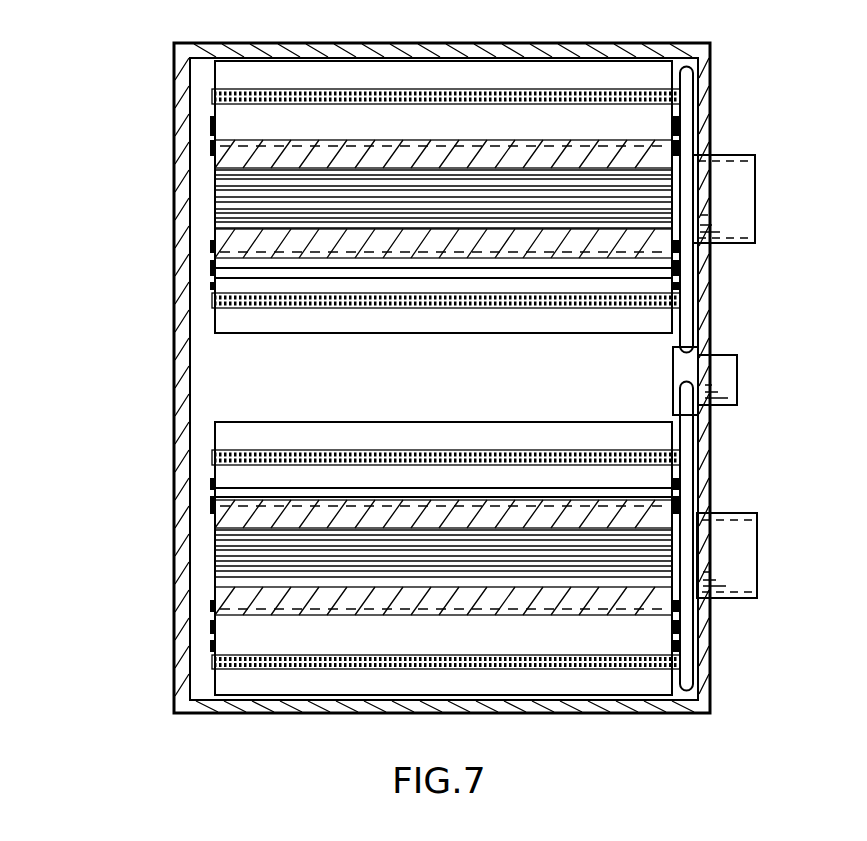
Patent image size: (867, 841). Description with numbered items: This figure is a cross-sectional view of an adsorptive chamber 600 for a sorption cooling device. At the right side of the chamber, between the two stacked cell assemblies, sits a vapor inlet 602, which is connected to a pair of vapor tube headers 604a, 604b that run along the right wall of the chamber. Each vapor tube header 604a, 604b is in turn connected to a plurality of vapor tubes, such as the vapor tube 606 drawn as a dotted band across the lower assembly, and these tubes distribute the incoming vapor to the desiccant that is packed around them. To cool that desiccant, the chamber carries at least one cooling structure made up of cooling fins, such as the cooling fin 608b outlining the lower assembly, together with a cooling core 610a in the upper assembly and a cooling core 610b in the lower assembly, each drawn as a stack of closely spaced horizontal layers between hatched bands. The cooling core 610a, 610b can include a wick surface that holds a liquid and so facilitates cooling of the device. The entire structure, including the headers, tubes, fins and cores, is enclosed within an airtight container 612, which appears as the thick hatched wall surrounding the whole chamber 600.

The adsorptive chamber 600 is at (160, 372).
The vapor inlet 602 is at (738, 380).
The vapor tube header 604a is at (685, 647).
The vapor tube header 604b is at (687, 127).
The vapor tube 606 is at (332, 448).
The cooling fin 608b is at (490, 433).
The cooling core 610a is at (219, 188).
The cooling core 610b is at (220, 553).
The airtight container 612 is at (580, 42).